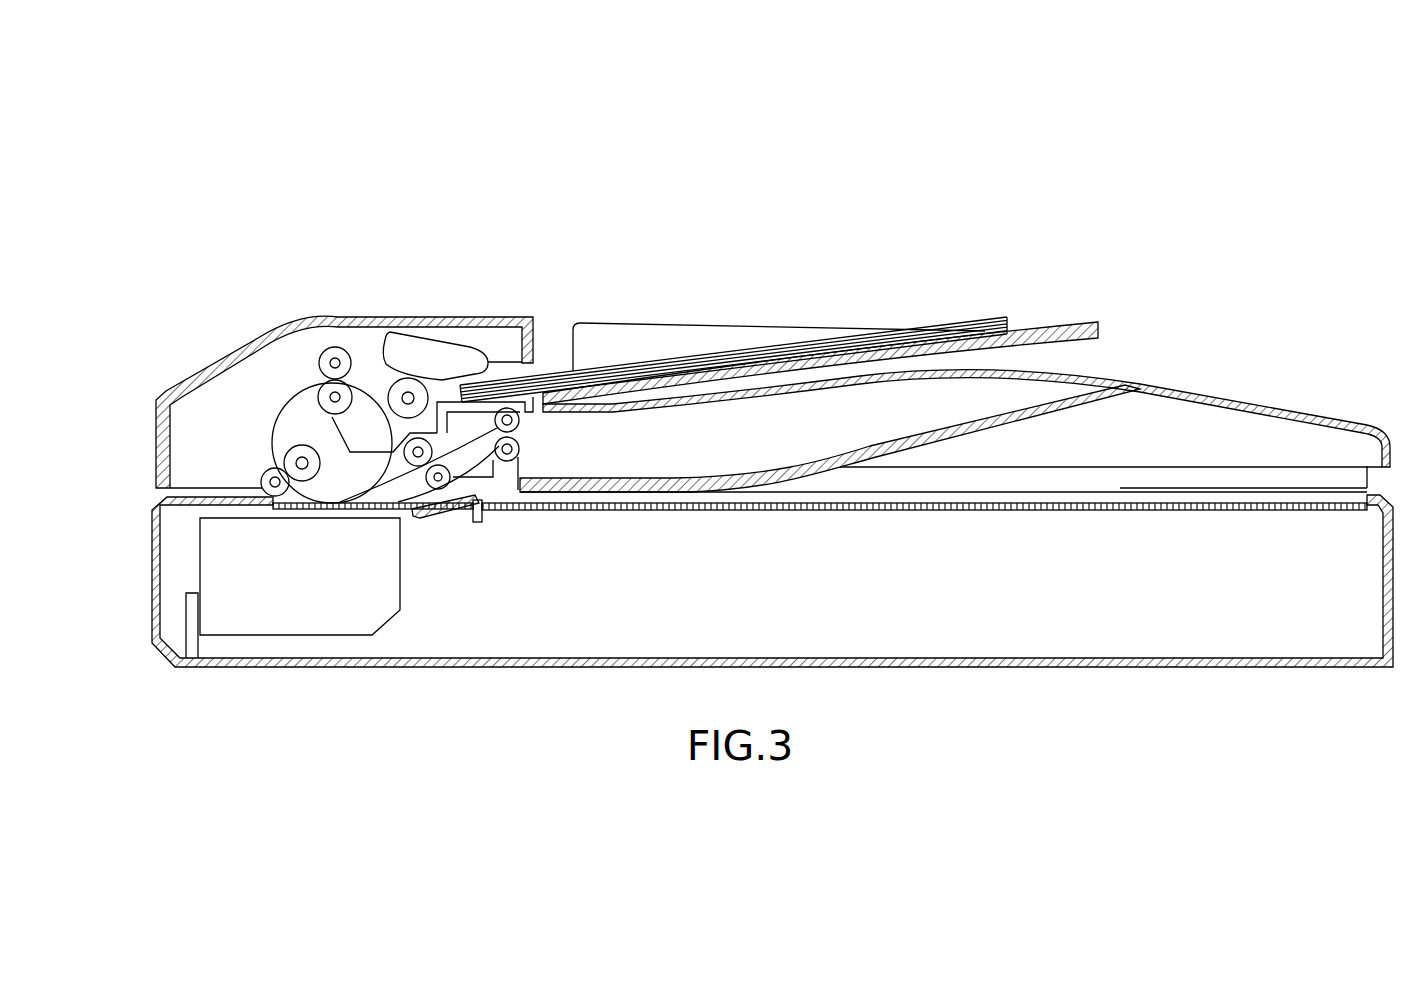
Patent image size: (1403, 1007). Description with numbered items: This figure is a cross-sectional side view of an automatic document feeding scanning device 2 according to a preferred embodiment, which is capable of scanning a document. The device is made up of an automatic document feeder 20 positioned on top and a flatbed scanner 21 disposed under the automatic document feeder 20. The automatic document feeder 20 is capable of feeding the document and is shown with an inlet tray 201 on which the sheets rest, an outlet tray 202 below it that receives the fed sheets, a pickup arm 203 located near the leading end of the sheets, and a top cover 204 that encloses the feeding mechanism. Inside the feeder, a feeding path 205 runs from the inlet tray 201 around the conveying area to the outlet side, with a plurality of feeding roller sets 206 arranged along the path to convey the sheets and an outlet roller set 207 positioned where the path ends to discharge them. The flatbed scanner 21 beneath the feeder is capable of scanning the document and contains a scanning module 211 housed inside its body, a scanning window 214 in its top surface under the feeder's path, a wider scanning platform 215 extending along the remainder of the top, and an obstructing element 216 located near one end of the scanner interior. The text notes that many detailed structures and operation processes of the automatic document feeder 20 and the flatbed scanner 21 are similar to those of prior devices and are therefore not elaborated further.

The automatic document feeding scanning device 2 is at (1155, 247).
The automatic document feeder 20 is at (1240, 355).
The flatbed scanner 21 is at (143, 600).
The inlet tray 201 is at (850, 366).
The outlet tray 202 is at (825, 457).
The pickup arm 203 is at (430, 355).
The top cover 204 is at (413, 324).
The feeding path 205 is at (286, 396).
The feeding roller sets 206 is at (333, 347).
The outlet roller set 207 is at (518, 419).
The scanning module 211 is at (298, 612).
The scanning window 214 is at (297, 508).
The scanning platform 215 is at (1197, 506).
The obstructing element 216 is at (195, 633).